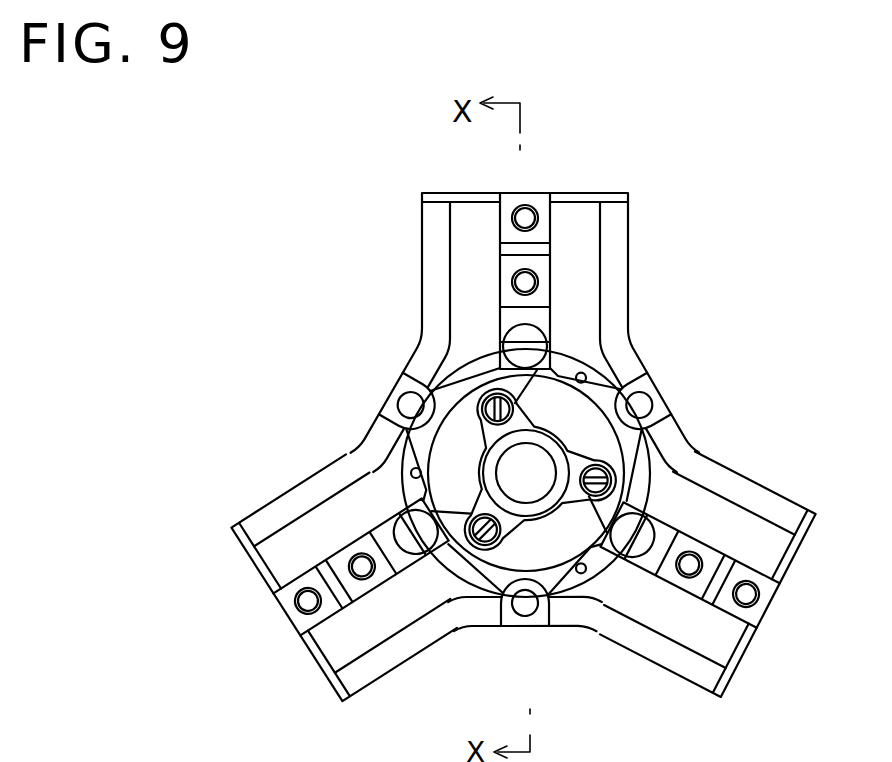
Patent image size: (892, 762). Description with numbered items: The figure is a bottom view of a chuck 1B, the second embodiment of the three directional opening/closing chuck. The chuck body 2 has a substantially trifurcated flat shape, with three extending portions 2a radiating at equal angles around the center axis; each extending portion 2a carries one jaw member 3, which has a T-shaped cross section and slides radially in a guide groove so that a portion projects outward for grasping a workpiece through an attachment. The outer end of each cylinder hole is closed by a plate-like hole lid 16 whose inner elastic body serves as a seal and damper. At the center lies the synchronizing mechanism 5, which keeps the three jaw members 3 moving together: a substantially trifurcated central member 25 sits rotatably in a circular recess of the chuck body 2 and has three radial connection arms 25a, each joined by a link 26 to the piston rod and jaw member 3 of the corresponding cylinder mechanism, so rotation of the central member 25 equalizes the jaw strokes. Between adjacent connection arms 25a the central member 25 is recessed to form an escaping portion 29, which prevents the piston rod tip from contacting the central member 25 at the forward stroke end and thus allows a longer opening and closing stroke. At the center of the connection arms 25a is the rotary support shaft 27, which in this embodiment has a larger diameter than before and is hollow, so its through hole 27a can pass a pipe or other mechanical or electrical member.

The chuck 1B is at (657, 190).
The chuck body 2 is at (660, 383).
The extending portions 2a is at (620, 228).
The jaw members 3 is at (538, 203).
The synchronizing mechanism 5 is at (569, 409).
The hole lid 16 is at (467, 200).
The central member 25 is at (628, 490).
The connection arms 25a is at (485, 392).
The links 26 is at (490, 396).
The rotary support shaft 27 is at (520, 471).
The through hole 27a is at (487, 473).
The escaping portion 29 is at (553, 517).